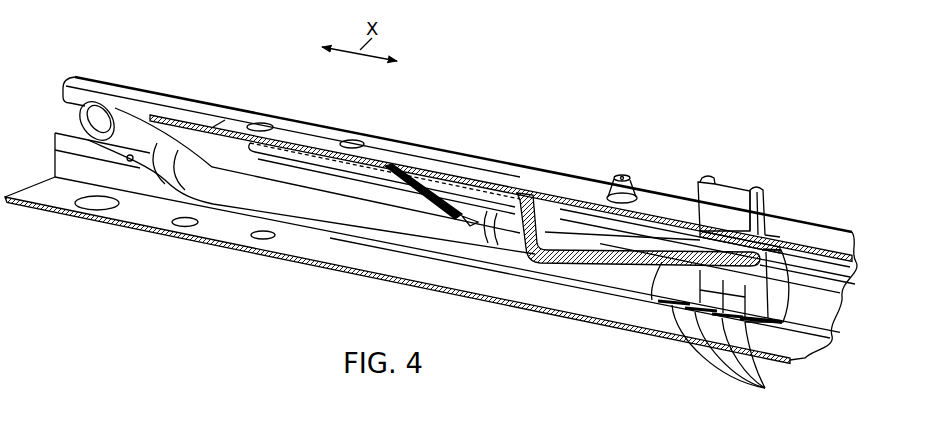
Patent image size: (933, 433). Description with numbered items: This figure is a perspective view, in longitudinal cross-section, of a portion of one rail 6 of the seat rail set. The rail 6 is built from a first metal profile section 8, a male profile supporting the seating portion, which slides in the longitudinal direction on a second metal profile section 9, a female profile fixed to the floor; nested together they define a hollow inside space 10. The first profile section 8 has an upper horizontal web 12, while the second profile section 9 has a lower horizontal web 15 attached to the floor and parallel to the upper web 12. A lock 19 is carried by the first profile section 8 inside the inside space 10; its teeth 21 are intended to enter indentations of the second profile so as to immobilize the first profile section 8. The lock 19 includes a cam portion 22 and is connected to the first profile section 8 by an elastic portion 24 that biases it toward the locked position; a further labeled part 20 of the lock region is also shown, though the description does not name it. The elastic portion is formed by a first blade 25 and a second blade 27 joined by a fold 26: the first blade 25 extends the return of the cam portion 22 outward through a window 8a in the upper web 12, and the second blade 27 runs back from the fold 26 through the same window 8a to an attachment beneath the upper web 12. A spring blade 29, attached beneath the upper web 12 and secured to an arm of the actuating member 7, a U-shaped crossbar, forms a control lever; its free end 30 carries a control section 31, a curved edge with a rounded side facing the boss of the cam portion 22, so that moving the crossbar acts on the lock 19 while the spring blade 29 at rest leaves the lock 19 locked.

The rail 6 is at (556, 78).
The actuating member 7 is at (133, 133).
The first metal profile section 8 is at (853, 236).
The window 8a is at (773, 237).
The second metal profile section 9 is at (598, 327).
The hollow inside space 10 is at (405, 252).
The upper horizontal web 12 is at (454, 160).
The lower horizontal web 15 is at (530, 292).
The lock 19 is at (804, 302).
The spring element 20 is at (785, 345).
The teeth 21 is at (733, 354).
The cam portion 22 is at (782, 288).
The elastic portion 24 is at (775, 191).
The first blade 25 is at (712, 215).
The fold 26 is at (707, 183).
The second blade 27 is at (753, 213).
The spring blade 29 is at (528, 195).
The free end 30 is at (683, 267).
The control section 31 is at (782, 253).